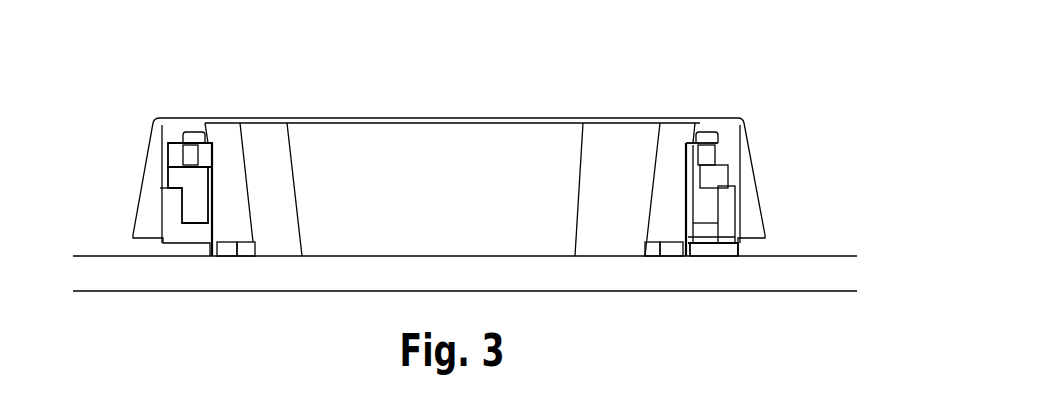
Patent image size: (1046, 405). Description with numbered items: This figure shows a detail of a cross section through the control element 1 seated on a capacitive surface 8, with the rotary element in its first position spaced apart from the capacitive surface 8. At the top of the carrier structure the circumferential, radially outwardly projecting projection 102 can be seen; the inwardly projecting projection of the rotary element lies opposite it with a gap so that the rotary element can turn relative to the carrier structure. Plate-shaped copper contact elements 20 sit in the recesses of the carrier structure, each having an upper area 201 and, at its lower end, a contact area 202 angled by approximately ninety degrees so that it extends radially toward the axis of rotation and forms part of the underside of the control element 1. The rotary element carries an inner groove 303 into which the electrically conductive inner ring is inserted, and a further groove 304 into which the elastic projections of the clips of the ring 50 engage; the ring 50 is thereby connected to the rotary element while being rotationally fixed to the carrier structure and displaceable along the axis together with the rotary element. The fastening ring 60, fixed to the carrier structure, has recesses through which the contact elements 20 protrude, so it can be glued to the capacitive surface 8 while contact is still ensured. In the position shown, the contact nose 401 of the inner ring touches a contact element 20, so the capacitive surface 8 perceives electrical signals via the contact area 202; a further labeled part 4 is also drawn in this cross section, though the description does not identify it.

The control element 1 is at (677, 195).
The right latch 4 is at (695, 155).
The capacitive surface 8 is at (439, 280).
The contact element 20 is at (217, 147).
The ring 50 is at (725, 178).
The fastening ring 60 is at (723, 245).
The projection 102 is at (693, 143).
The upper area 201 is at (703, 235).
The contact area 202 is at (226, 256).
The inner groove 303 is at (167, 160).
The further groove 304 is at (735, 186).
The contact nose 401 is at (200, 140).